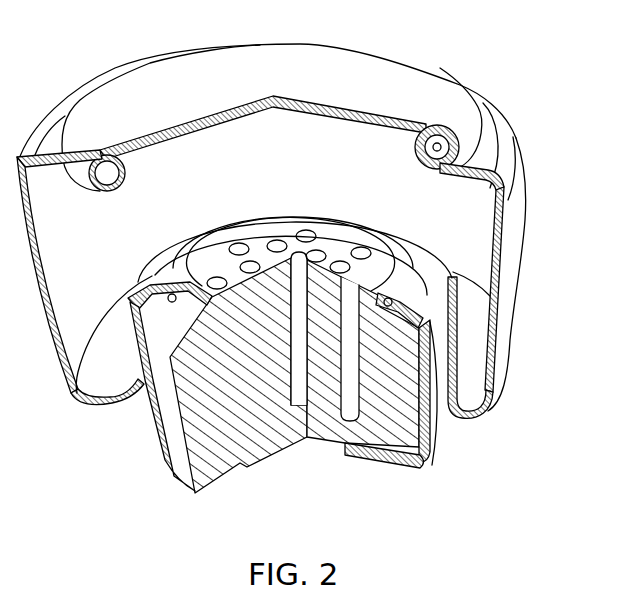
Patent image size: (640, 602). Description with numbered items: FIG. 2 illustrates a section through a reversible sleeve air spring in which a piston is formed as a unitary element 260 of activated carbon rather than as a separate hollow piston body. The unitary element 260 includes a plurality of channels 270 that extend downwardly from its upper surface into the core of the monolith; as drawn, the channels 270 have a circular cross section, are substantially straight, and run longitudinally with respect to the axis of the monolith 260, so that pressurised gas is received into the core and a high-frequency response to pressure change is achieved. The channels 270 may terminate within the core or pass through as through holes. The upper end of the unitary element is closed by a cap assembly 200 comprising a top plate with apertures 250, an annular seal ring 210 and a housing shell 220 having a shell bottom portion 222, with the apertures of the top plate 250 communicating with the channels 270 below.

The cap assembly 200 is at (542, 76).
The annular seal ring 210 is at (137, 88).
The housing shell 220 is at (508, 277).
The shell bottom portion 222 is at (435, 433).
The top plate with apertures 250 is at (307, 186).
The unitary element 260 is at (257, 443).
The channels 270 is at (383, 457).